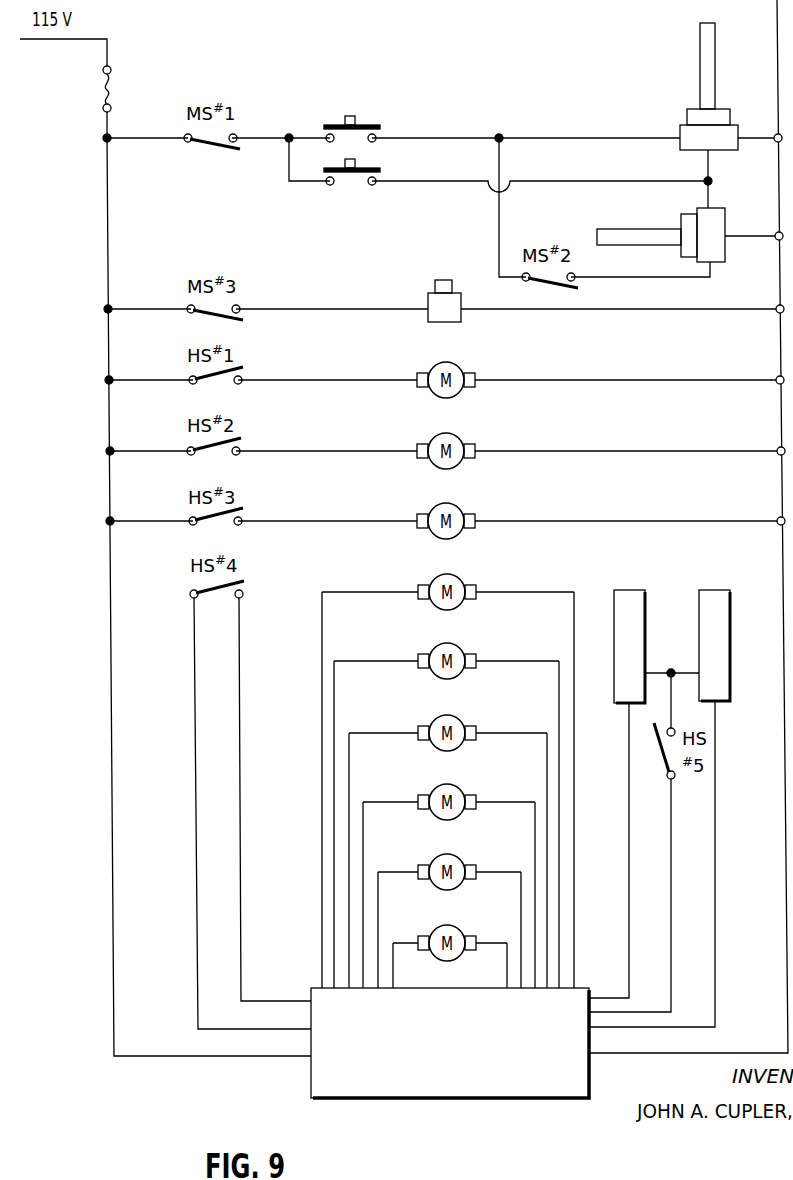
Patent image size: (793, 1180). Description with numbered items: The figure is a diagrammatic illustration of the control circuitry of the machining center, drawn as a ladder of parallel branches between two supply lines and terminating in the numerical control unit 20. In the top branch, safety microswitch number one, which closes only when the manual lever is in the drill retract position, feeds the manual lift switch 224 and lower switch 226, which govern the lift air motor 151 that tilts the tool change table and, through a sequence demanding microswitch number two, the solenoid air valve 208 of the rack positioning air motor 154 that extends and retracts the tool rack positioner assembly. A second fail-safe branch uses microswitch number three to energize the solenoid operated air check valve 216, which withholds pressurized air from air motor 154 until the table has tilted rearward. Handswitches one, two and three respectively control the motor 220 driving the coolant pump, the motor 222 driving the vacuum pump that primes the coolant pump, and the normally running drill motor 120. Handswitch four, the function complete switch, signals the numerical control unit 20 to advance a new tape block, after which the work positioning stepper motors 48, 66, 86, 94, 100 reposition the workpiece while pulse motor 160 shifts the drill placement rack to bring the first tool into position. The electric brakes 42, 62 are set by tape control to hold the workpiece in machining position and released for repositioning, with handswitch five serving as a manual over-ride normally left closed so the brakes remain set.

The numerical control unit 20 is at (333, 1075).
The electric brake 42 is at (627, 600).
The stepper motor 48 is at (434, 860).
The electric brake 62 is at (714, 598).
The stepper motor 66 is at (432, 649).
The stepper motor 86 is at (434, 790).
The stepper motor 94 is at (432, 720).
The stepper motor 100 is at (432, 579).
The drill motor 120 is at (432, 508).
The lift air motor 151 is at (707, 87).
The rack positioning air motor 154 is at (686, 222).
The pulse motor 160 is at (436, 931).
The solenoid air valve 208 is at (716, 249).
The solenoid operated air check valve 216 is at (428, 300).
The motor 220 is at (432, 367).
The motor 222 is at (432, 438).
The lift switch 224 is at (356, 118).
The lower switch 226 is at (362, 161).